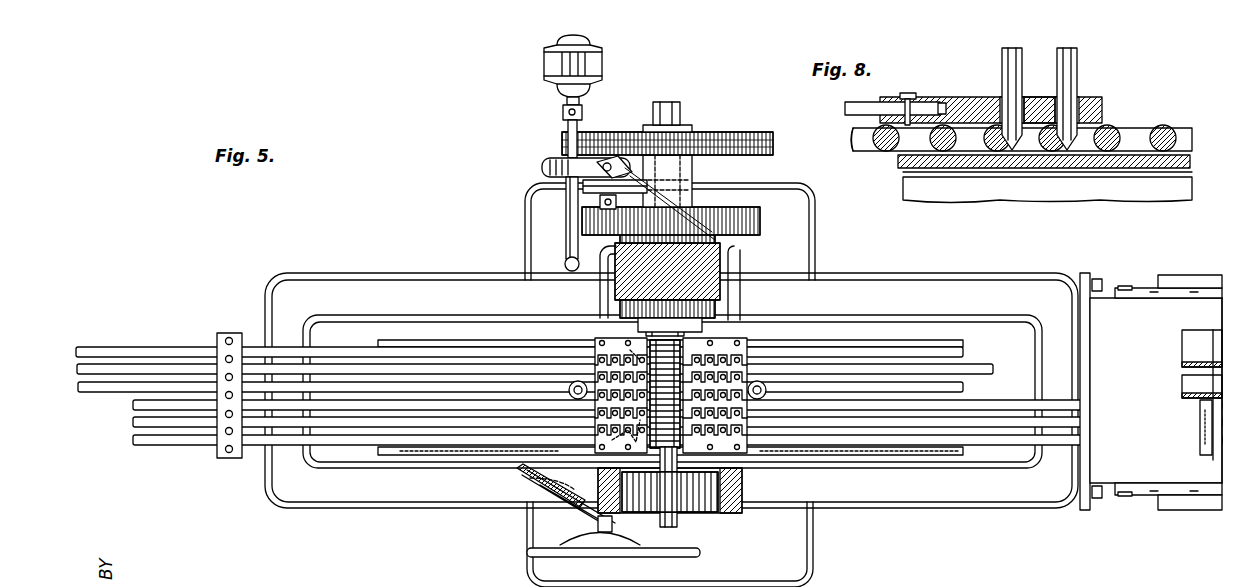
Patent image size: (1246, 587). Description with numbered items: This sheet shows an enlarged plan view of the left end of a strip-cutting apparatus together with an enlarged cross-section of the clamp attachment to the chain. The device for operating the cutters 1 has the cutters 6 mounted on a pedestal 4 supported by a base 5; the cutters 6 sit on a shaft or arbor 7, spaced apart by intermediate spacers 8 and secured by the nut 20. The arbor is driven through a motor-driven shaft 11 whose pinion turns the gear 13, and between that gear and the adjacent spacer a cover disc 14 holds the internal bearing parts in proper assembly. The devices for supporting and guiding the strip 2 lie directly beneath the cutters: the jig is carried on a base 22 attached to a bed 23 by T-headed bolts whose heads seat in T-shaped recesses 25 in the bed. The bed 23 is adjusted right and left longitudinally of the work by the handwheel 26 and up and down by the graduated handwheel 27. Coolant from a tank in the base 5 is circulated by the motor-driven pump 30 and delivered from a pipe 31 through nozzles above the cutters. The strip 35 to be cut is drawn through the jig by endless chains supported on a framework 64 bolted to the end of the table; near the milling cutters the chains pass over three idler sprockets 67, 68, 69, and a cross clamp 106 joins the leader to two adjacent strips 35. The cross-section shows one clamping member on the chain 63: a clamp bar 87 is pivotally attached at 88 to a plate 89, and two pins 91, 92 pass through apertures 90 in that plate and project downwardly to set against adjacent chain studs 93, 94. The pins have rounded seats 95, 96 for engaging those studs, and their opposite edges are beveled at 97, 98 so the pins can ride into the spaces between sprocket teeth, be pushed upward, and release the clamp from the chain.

In FIG. 5, the device for operating the cutters 1 is at (730, 513).
In FIG. 5, the devices for supporting and guiding the strip 2 is at (760, 456).
In FIG. 5, the pedestal 4 is at (712, 277).
In FIG. 5, the base 5 is at (812, 537).
In FIG. 5, the cutters 6 is at (648, 350).
In FIG. 5, the shaft or arbor 7 is at (677, 520).
In FIG. 5, the intermediate spacers 8 is at (671, 425).
In FIG. 5, the shaft 11 is at (667, 100).
In FIG. 5, the gear 13 is at (750, 236).
In FIG. 5, the cover disc 14 is at (740, 305).
In FIG. 5, the nut 20 is at (670, 492).
In FIG. 5, the base 22 is at (598, 471).
In FIG. 5, the bed 23 is at (357, 322).
In FIG. 5, the T-shaped recesses 25 is at (578, 381).
In FIG. 5, the handwheel 26 is at (655, 560).
In FIG. 5, the handwheel 27 is at (585, 526).
In FIG. 5, the motor-driven pump 30 is at (542, 165).
In FIG. 5, the pipe 31 is at (615, 332).
In FIG. 5, the strip 35 is at (128, 440).
In FIG. 5, the framework 64 is at (1152, 474).
In FIG. 5, the idler sprocket 67 is at (1208, 446).
In FIG. 5, the idler sprocket 68 is at (1190, 393).
In FIG. 5, the idler sprocket 69 is at (1190, 362).
In FIG. 5, the cross clamp 106 is at (229, 460).
In FIG. 8, the endless chain 63 is at (1150, 127).
In FIG. 8, the clamp bar 87 is at (845, 108).
In FIG. 8, the pivot 88 is at (912, 94).
In FIG. 8, the plate 89 is at (1102, 110).
In FIG. 8, the apertures 90 is at (1006, 105).
In FIG. 8, the pin 91 is at (1002, 58).
In FIG. 8, the pin 92 is at (1077, 60).
In FIG. 8, the chain stud 93 is at (1003, 150).
In FIG. 8, the chain stud 94 is at (1063, 152).
In FIG. 8, the rounded seat 95 is at (1008, 150).
In FIG. 8, the rounded seat 96 is at (1048, 100).
In FIG. 8, the bevel 97 is at (1014, 152).
In FIG. 8, the bevel 98 is at (1072, 150).